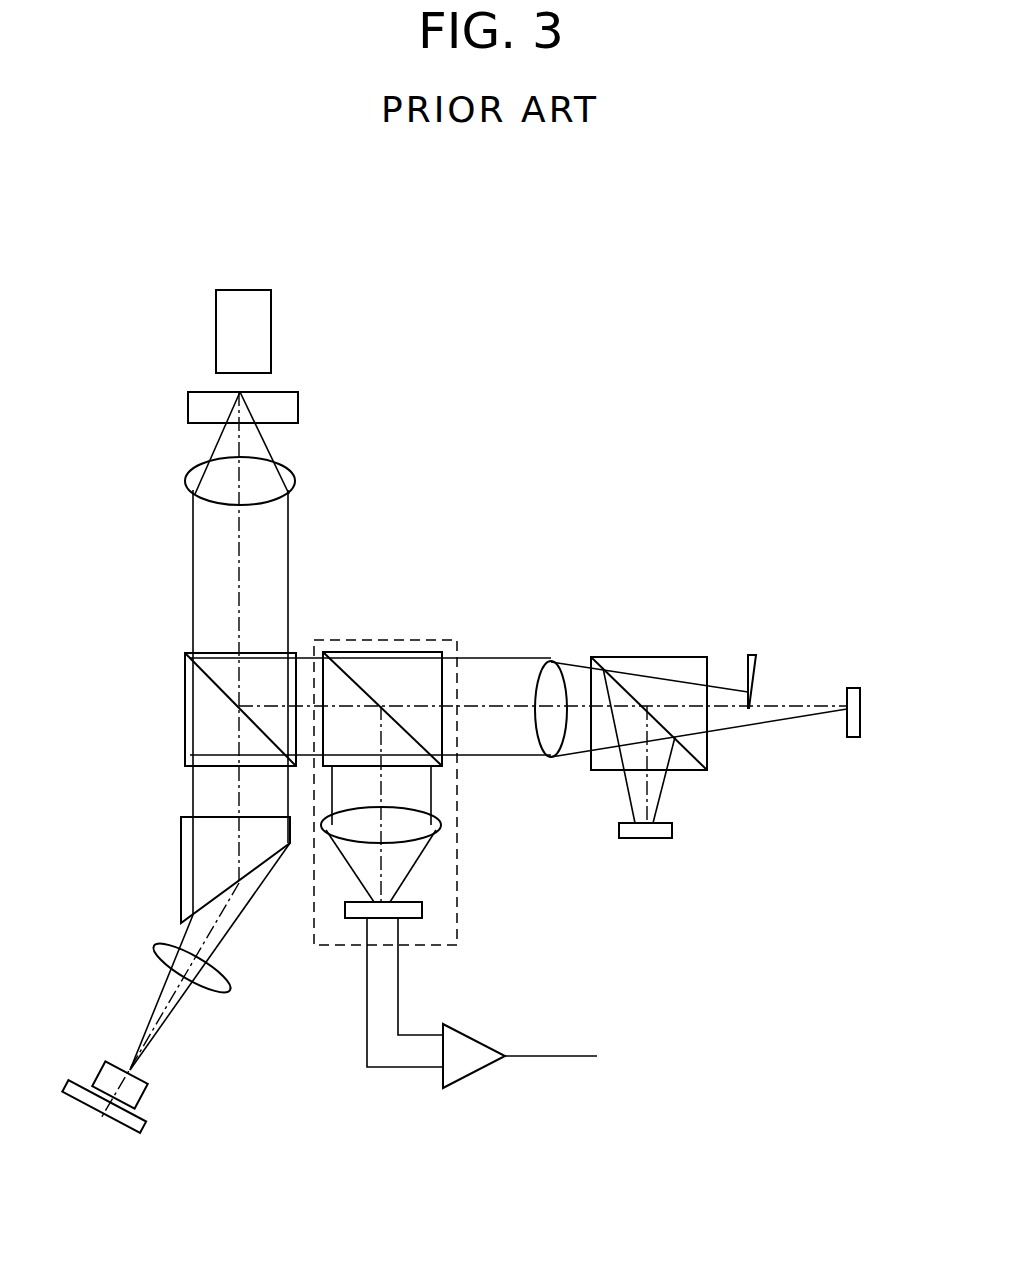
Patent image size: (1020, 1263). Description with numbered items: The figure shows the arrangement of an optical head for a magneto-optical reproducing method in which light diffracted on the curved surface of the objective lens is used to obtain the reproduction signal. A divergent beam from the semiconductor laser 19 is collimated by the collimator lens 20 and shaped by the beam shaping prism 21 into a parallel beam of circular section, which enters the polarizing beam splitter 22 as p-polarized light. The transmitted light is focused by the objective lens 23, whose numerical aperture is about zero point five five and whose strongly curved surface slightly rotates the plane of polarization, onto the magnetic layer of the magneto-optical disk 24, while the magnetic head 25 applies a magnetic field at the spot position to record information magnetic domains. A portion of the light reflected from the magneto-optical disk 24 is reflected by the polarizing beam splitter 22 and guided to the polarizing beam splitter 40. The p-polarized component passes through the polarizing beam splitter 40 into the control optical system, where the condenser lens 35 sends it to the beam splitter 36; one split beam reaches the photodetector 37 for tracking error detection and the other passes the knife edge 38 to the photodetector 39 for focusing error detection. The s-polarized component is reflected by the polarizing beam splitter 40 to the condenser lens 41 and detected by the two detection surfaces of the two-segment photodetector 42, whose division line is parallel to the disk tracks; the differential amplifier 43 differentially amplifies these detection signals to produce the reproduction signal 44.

The semiconductor laser 19 is at (73, 1085).
The collimator lens 20 is at (157, 947).
The beam shaping prism 21 is at (181, 860).
The polarizing beam splitter 22 is at (185, 700).
The objective lens 23 is at (295, 478).
The magneto-optical disk 24 is at (298, 402).
The magnetic head 25 is at (271, 332).
The condenser lens 35 is at (551, 661).
The beam splitter 36 is at (689, 655).
The photodetector 37 is at (672, 829).
The knife edge 38 is at (755, 653).
The photodetector 39 is at (854, 688).
The polarizing beam splitter 40 is at (394, 648).
The condenser lens 41 is at (447, 823).
The two-segment photodetector 42 is at (422, 907).
The differential amplifier 43 is at (466, 1081).
The reproduction signal 44 is at (560, 1058).